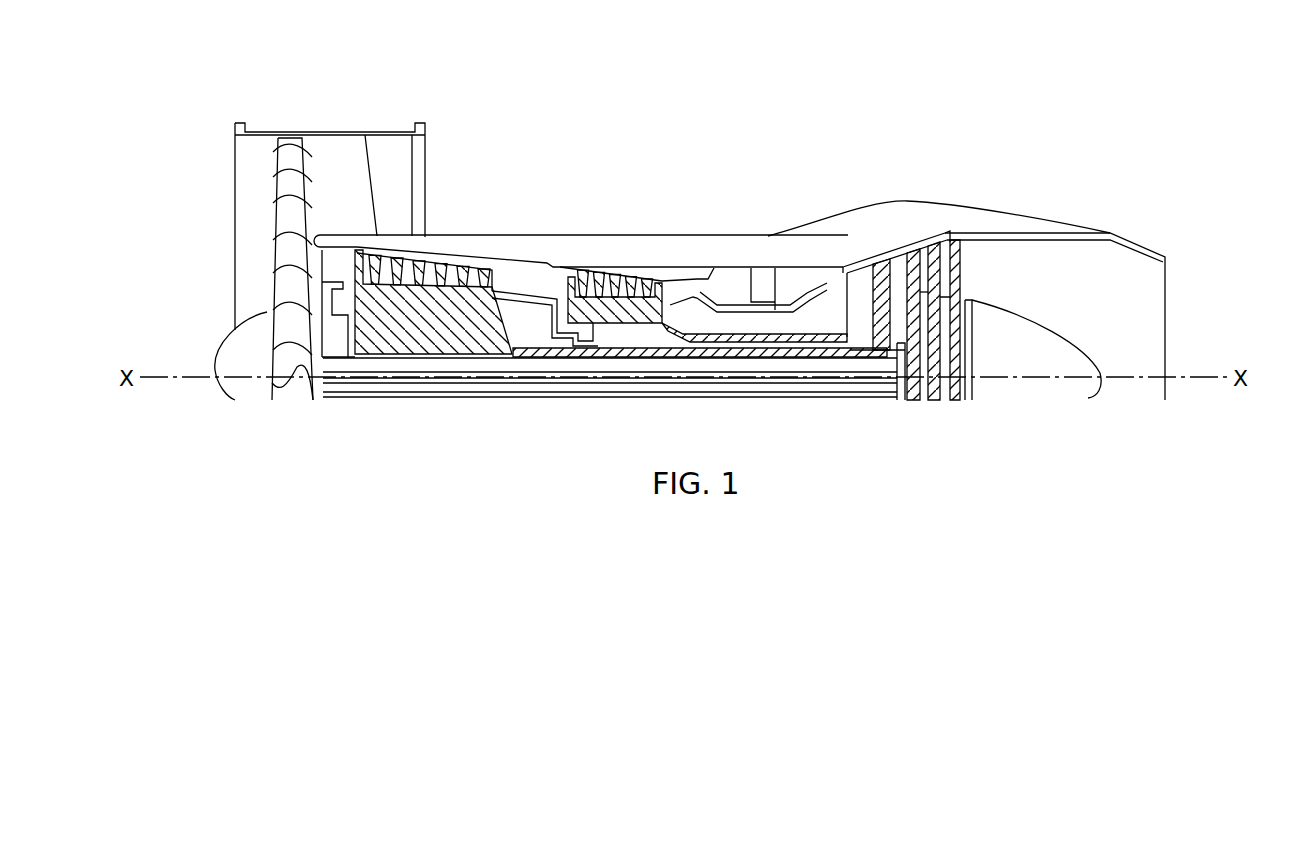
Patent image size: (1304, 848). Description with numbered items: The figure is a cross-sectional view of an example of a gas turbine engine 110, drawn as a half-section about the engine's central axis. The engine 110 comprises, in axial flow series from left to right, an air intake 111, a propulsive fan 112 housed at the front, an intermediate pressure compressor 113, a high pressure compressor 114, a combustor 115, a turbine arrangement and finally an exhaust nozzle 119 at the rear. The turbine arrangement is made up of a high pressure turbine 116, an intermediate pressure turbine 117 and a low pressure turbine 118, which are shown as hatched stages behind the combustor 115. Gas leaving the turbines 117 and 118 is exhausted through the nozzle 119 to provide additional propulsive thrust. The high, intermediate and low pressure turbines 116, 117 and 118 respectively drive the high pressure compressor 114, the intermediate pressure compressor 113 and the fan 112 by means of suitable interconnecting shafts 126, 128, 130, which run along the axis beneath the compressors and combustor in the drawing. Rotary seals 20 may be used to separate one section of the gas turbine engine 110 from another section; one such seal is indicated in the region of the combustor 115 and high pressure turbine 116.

The gas turbine engine 110 is at (612, 165).
The air intake 111 is at (207, 248).
The propulsive fan 112 is at (297, 161).
The intermediate pressure compressor 113 is at (428, 296).
The high pressure compressor 114 is at (620, 283).
The combustor 115 is at (766, 256).
The high pressure turbine 116 is at (863, 262).
The intermediate pressure turbine 117 is at (913, 252).
The low pressure turbine 118 is at (960, 245).
The exhaust nozzle 119 is at (1150, 328).
The rotary seal 20 is at (836, 300).
The interconnecting shaft 126 is at (810, 340).
The interconnecting shaft 128 is at (550, 350).
The interconnecting shaft 130 is at (450, 398).